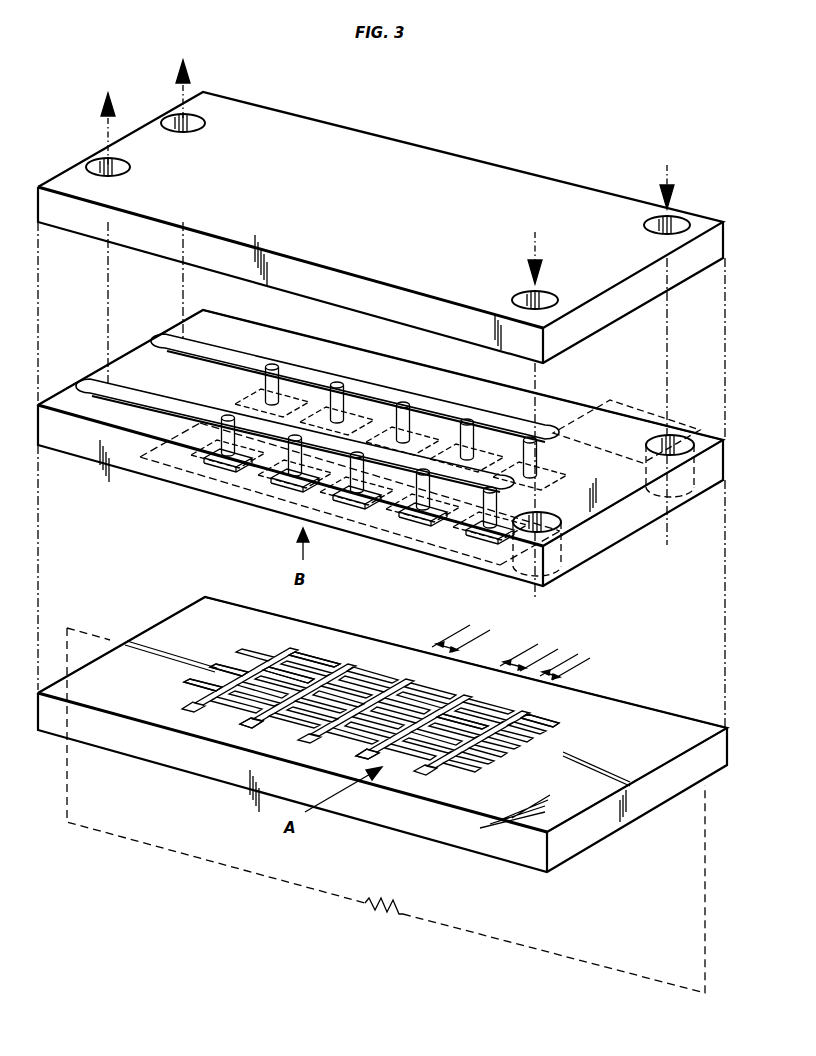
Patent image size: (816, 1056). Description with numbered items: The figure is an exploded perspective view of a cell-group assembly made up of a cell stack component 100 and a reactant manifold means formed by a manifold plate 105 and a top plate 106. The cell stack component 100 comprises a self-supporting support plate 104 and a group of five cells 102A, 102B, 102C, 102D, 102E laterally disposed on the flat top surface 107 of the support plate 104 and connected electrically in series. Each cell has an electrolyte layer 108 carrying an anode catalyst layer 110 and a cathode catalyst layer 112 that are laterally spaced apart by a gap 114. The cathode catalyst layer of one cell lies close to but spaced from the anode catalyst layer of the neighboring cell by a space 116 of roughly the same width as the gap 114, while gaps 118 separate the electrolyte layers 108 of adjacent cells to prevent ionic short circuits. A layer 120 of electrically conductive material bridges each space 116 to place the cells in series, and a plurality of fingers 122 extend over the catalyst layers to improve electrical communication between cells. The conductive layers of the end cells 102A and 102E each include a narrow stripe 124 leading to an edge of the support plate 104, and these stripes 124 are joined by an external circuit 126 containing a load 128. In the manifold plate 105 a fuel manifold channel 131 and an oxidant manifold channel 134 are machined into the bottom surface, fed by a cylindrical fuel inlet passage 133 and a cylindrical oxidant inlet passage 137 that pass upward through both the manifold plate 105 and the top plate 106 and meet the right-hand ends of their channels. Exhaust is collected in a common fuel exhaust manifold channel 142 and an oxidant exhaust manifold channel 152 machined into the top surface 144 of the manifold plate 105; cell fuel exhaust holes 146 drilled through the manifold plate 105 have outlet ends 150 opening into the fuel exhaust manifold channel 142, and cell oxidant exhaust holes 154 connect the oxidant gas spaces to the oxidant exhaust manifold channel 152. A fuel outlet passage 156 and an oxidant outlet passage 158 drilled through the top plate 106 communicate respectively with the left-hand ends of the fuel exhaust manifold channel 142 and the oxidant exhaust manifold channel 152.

The cell stack component 100 is at (624, 143).
The cell 102A is at (182, 707).
The cell 102B is at (251, 722).
The cell 102C is at (322, 741).
The cell 102D is at (380, 758).
The cell 102E is at (440, 773).
The support plate 104 is at (690, 781).
The manifold plate 105 is at (605, 538).
The top plate 106 is at (673, 272).
The top surface 107 is at (637, 712).
The electrolyte layer 108 is at (334, 705).
The anode catalyst layer 110 is at (272, 662).
The cathode catalyst layer 112 is at (296, 652).
The gap 114 is at (549, 669).
The space 116 is at (519, 657).
The gaps 118 is at (449, 640).
The layer of electrically conductive material 120 is at (265, 741).
The fingers 122 is at (245, 670).
The stripe of electrically conductive material 124 is at (145, 651).
The external circuit 126 is at (590, 960).
The load 128 is at (388, 901).
The fuel manifold channel 131 is at (470, 548).
The fuel inlet passage 133 is at (548, 298).
The oxidant manifold channel 134 is at (622, 460).
The oxidant inlet passage 137 is at (676, 222).
The fuel exhaust manifold channel 142 is at (174, 344).
The top surface 144 is at (150, 353).
The cell fuel exhaust holes 146 is at (352, 397).
The outlet ends 150 is at (268, 365).
The oxidant exhaust manifold channel 152 is at (92, 382).
The cell oxidant exhaust holes 154 is at (228, 416).
The fuel outlet passage 156 is at (181, 118).
The oxidant outlet passage 158 is at (100, 162).